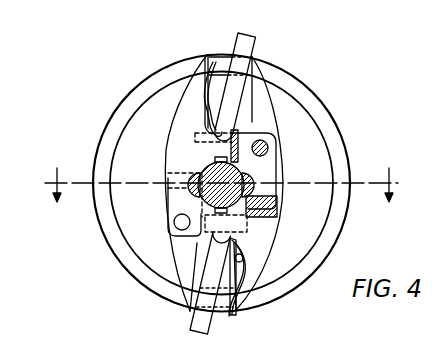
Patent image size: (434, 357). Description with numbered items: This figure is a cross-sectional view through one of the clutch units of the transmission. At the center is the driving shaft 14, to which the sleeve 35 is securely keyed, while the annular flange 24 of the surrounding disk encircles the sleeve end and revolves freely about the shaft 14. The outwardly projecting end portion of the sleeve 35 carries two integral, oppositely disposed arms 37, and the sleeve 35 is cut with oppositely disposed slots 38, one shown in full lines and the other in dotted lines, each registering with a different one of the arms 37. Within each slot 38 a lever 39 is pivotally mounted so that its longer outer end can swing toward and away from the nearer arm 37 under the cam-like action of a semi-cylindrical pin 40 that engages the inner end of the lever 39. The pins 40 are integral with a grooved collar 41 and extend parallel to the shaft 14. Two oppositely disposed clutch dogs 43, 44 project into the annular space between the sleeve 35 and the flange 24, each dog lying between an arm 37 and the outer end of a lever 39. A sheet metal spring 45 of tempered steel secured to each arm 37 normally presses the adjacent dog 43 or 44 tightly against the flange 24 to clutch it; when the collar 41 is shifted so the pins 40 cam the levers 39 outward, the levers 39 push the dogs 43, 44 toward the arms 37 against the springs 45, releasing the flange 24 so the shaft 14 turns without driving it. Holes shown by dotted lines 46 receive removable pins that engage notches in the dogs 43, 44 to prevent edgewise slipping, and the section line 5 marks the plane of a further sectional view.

The section line 5- 5 is at (219, 185).
The driving shaft 14 is at (211, 165).
The annular flange 24 is at (340, 218).
The sleeve 35 is at (222, 218).
The arm 37 is at (176, 111).
The slot 38 is at (170, 166).
The lever 39 is at (265, 108).
The semi-cylindrical pin 40 is at (261, 156).
The grooved collar 41 is at (224, 195).
The clutch dog 43 is at (249, 48).
The clutch dog 44 is at (208, 332).
The sheet metal spring 45 is at (222, 60).
The holes (dotted lines) 46 is at (207, 122).